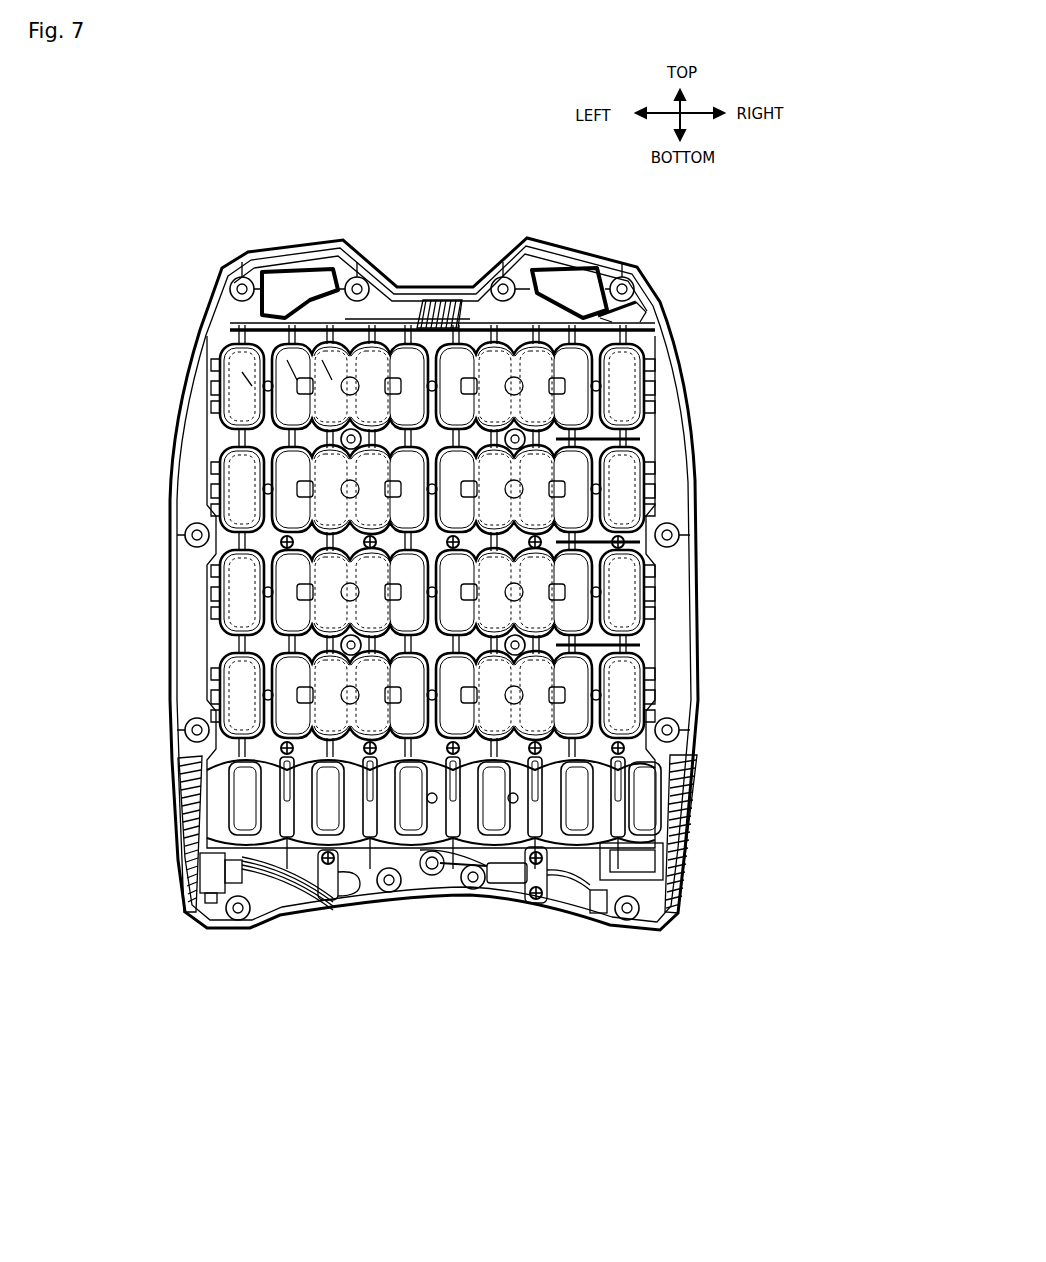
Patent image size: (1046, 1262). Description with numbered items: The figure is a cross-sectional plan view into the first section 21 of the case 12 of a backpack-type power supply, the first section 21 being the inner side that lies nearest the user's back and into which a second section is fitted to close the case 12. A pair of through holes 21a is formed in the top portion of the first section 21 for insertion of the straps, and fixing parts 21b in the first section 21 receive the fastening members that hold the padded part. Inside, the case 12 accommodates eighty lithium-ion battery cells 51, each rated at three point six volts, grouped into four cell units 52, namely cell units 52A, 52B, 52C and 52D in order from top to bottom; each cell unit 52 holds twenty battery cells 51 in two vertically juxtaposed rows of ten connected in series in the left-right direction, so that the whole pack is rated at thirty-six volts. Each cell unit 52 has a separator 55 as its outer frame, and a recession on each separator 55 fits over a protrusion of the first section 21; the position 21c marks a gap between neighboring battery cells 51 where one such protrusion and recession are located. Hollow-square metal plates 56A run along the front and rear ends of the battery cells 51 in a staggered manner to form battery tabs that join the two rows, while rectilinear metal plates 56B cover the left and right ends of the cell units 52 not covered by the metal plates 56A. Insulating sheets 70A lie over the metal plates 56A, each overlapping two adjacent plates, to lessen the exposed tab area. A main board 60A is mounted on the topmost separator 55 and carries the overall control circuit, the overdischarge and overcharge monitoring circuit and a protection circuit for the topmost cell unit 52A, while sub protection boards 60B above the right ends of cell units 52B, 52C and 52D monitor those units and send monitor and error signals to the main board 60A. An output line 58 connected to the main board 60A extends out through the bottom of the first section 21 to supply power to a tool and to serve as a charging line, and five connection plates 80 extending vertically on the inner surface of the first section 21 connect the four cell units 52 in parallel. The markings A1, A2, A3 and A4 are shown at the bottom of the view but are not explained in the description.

The case 12 is at (393, 185).
The first section 21 is at (652, 287).
The through holes 21a is at (560, 347).
The fixing parts 21b is at (508, 385).
The position 21c is at (650, 374).
The battery cell 51 is at (648, 354).
The cell unit 52 is at (509, 541).
The cell unit 52A is at (628, 380).
The cell unit 52B is at (628, 487).
The cell unit 52C is at (630, 590).
The cell unit 52D is at (630, 690).
The separator 55 is at (576, 300).
The metal plates 56A is at (292, 373).
The metal plates 56B is at (247, 379).
The output line 58 is at (497, 876).
The main board 60A is at (652, 329).
The sub protection boards 60B is at (642, 438).
The insulating sheets 70A is at (327, 370).
The connection plates 80 is at (624, 788).
The region A1 is at (289, 973).
The region A2 is at (412, 970).
The region A3 is at (453, 968).
The region A4 is at (577, 972).